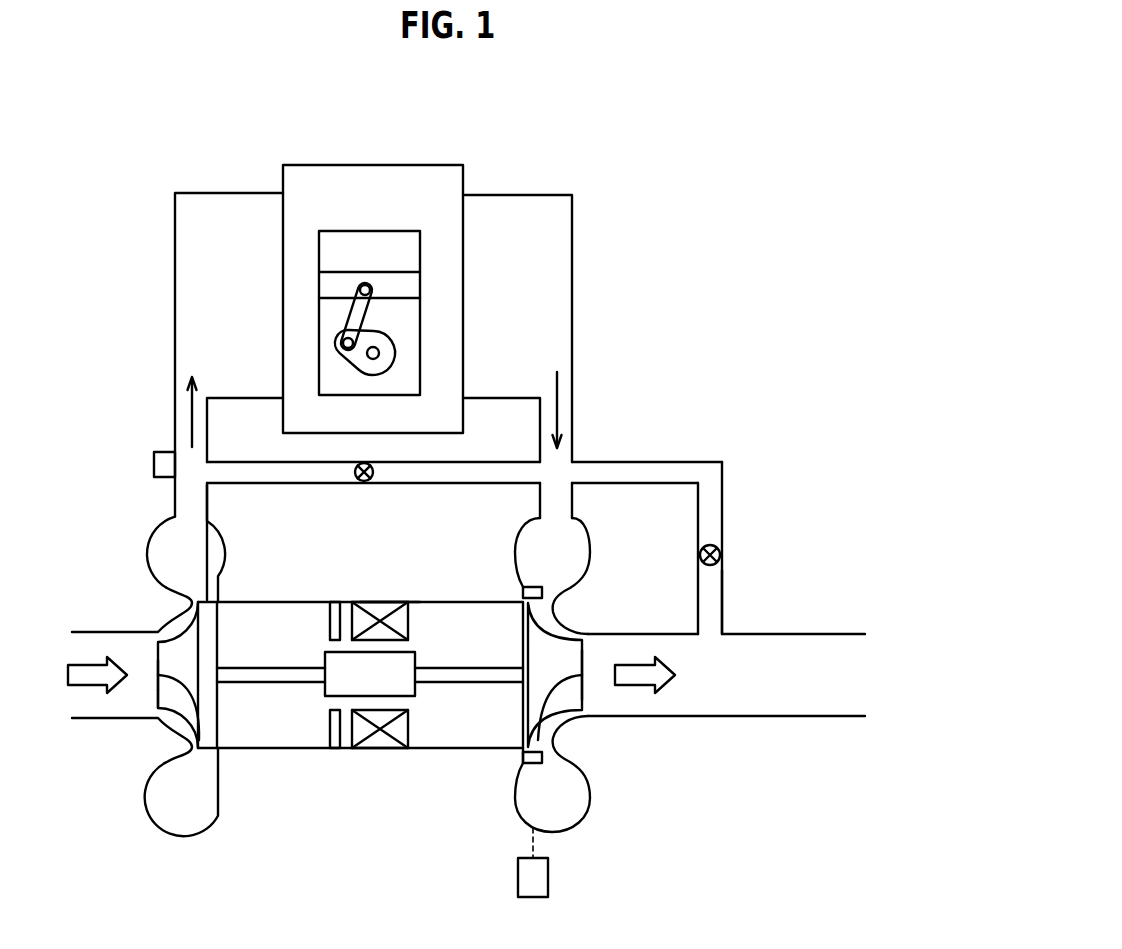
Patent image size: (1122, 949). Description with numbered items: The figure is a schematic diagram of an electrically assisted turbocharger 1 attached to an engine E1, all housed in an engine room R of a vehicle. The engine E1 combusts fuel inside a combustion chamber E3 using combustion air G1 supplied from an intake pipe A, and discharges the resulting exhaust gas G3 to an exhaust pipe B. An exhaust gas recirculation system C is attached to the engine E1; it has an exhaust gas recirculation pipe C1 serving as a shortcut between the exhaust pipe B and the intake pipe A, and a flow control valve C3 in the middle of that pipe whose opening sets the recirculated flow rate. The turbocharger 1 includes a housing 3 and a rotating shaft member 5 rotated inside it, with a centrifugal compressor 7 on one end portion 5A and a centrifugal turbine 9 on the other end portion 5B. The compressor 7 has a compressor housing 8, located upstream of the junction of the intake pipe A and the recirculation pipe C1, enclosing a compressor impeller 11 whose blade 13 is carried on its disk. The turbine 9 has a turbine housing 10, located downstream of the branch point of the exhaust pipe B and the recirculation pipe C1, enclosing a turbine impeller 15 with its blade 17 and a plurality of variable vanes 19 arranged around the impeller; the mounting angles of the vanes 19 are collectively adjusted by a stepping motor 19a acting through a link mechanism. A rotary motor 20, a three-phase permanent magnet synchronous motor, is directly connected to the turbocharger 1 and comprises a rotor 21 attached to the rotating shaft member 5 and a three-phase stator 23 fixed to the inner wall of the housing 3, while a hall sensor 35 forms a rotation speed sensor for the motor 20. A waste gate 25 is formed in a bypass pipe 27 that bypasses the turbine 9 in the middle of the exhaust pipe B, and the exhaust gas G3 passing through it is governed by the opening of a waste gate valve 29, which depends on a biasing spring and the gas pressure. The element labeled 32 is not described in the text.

The turbocharger 1 is at (649, 346).
The housing 3 is at (263, 600).
The rotating shaft member 5 is at (485, 682).
The one end portion 5A is at (205, 680).
The other end portion 5B is at (560, 683).
The centrifugal compressor 7 is at (125, 609).
The compressor housing 8 is at (175, 620).
The centrifugal turbine 9 is at (588, 607).
The turbine housing 10 is at (593, 632).
The compressor impeller 11 is at (196, 703).
The blade 13 is at (163, 695).
The turbine impeller 15 is at (573, 697).
The blade 17 is at (583, 716).
The variable vanes 19 is at (532, 587).
The stepping motor 19a is at (540, 878).
The rotary motor 20 is at (387, 596).
The rotor 21 is at (418, 698).
The three-phase stator 23 is at (405, 608).
The waste gate 25 is at (709, 544).
The bypass pipe 27 is at (698, 462).
The waste gate valve 29 is at (720, 555).
The sensor 32 is at (153, 465).
The hall sensor 35 is at (333, 625).
The intake pipe A is at (92, 718).
The exhaust pipe B is at (803, 718).
The exhaust gas recirculation system C is at (438, 492).
The exhaust gas recirculation pipe C1 is at (280, 485).
The flow control valve C3 is at (366, 483).
The engine E1 is at (416, 165).
The combustion chamber E3 is at (418, 240).
The combustion air G1 is at (190, 429).
The exhaust gas G3 is at (556, 402).
The engine room R is at (372, 831).